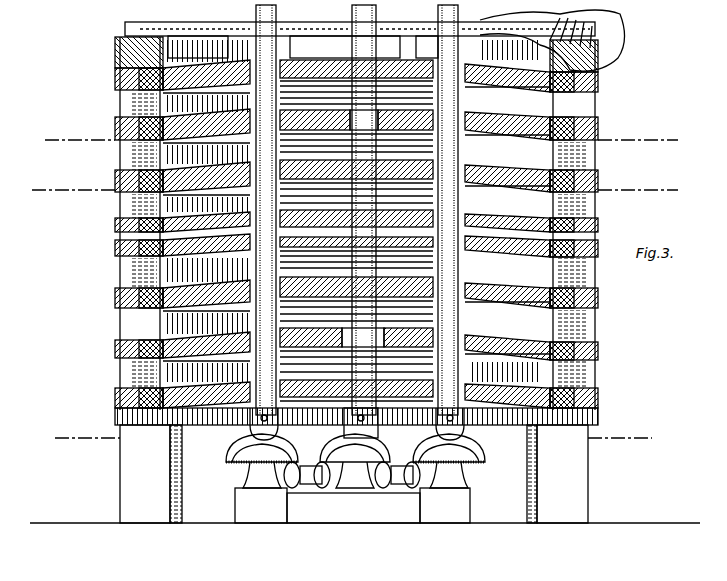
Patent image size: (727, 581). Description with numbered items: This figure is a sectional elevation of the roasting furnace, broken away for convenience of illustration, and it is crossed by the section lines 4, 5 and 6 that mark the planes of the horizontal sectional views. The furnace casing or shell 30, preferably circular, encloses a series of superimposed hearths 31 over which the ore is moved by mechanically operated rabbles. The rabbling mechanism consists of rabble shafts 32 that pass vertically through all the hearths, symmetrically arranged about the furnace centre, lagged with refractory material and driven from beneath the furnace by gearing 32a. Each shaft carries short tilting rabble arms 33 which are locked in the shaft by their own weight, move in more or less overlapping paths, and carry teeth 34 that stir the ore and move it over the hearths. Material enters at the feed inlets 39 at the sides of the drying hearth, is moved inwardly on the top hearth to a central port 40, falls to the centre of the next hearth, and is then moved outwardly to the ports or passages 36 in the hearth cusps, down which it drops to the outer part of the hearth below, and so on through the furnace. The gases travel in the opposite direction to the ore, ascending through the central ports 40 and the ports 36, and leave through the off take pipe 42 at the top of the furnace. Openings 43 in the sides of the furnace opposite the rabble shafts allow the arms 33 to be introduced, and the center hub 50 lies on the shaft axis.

The section line 4- 4 is at (354, 187).
The section line 5- 5 is at (361, 137).
The section line 6- 6 is at (353, 437).
The furnace casing or shell 30 is at (598, 80).
The superimposed hearths 31 is at (356, 222).
The rabble shafts 32 is at (252, 27).
The gearing 32a is at (355, 465).
The rabble arms 33 is at (165, 165).
The teeth 34 is at (598, 390).
The ports or passages 36 is at (165, 275).
The feed inlets 39 is at (115, 80).
The central port 40 is at (356, 230).
The off take pipe 42 is at (552, 40).
The openings 43 is at (358, 192).
The center hub beam 50 is at (356, 120).